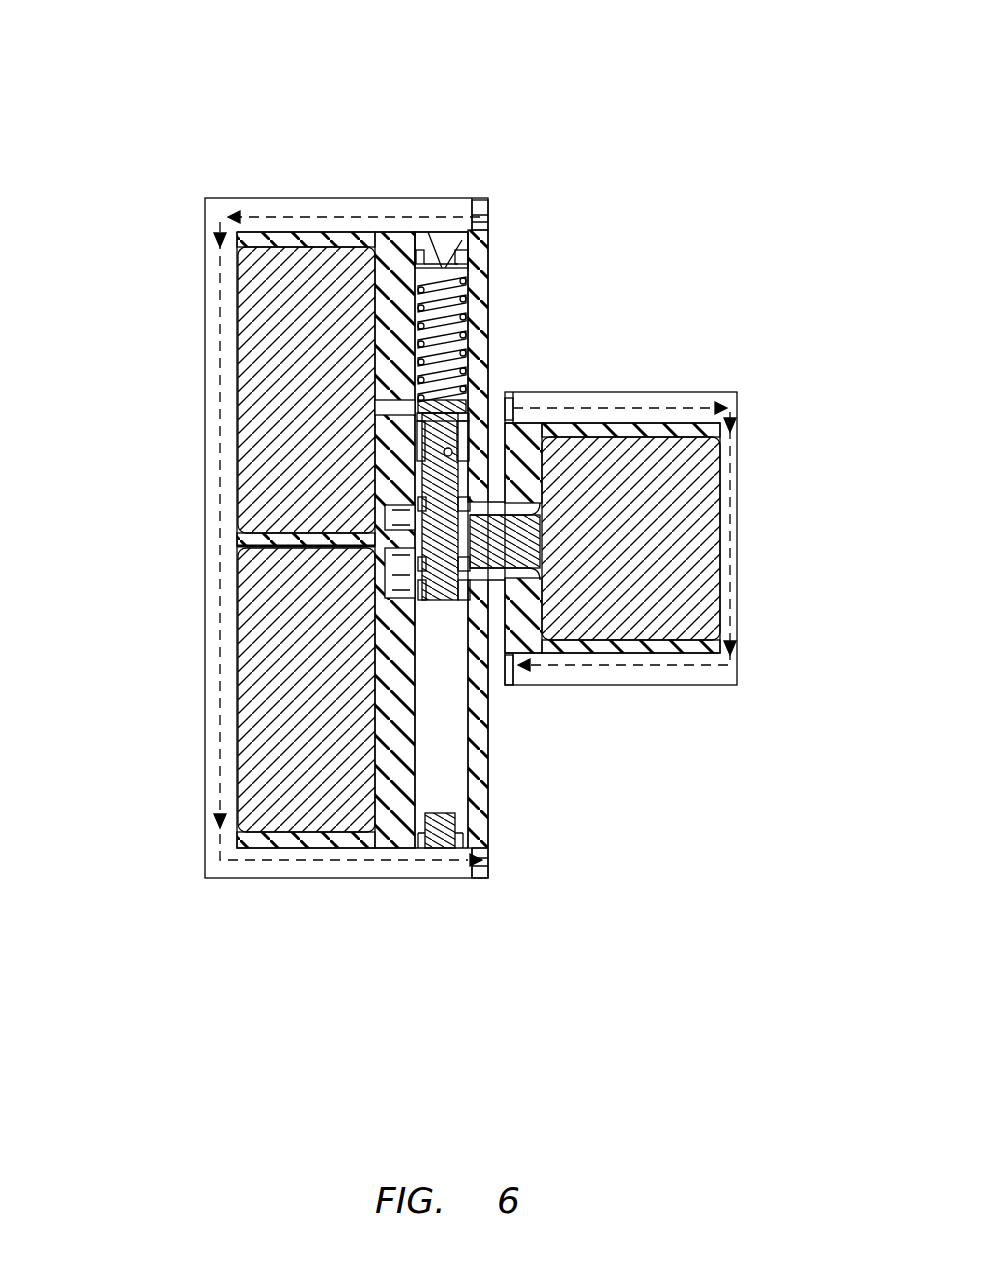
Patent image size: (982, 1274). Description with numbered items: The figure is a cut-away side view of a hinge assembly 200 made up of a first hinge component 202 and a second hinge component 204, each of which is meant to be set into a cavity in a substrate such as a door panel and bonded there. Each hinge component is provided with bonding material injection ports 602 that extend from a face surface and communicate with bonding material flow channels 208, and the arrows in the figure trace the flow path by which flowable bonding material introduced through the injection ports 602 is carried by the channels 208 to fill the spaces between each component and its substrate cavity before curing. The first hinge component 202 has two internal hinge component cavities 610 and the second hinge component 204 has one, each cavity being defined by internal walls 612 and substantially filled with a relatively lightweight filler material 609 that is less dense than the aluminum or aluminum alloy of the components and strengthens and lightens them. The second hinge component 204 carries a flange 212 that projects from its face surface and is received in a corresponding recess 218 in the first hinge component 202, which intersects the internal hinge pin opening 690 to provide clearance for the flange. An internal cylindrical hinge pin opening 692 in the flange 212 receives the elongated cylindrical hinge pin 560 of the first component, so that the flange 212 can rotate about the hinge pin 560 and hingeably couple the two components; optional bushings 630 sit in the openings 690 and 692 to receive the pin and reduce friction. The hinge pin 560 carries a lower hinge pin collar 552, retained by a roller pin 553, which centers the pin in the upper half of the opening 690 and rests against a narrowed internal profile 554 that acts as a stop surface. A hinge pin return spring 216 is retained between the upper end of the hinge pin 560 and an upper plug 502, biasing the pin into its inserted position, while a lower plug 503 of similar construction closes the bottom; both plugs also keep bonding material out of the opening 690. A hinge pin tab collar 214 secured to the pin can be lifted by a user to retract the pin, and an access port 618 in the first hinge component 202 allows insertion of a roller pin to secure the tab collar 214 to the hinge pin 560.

The hinge assembly 200 is at (126, 40).
The first hinge component 202 is at (215, 200).
The second hinge component 204 is at (725, 392).
The bonding material flow channels 208 is at (320, 210).
The flange 212 is at (540, 582).
The hinge pin tab collar 214 is at (466, 400).
The hinge pin return spring 216 is at (445, 268).
The recess 218 is at (466, 530).
The upper plug 502 is at (437, 250).
The lower plug 503 is at (435, 832).
The lower hinge pin collar 552 is at (418, 425).
The roller pin 553 is at (420, 455).
The narrowed internal profile 554 is at (425, 482).
The hinge pin 560 is at (260, 690).
The bonding material injection ports 602 is at (487, 207).
The filler material 609 is at (287, 408).
The internal hinge component cavities 610 is at (300, 430).
The internal walls 612 is at (217, 238).
The access port 618 is at (410, 407).
The bushings 630 is at (405, 590).
The internal hinge pin opening 690 is at (472, 335).
The internal cylindrical hinge pin opening 692 is at (480, 530).